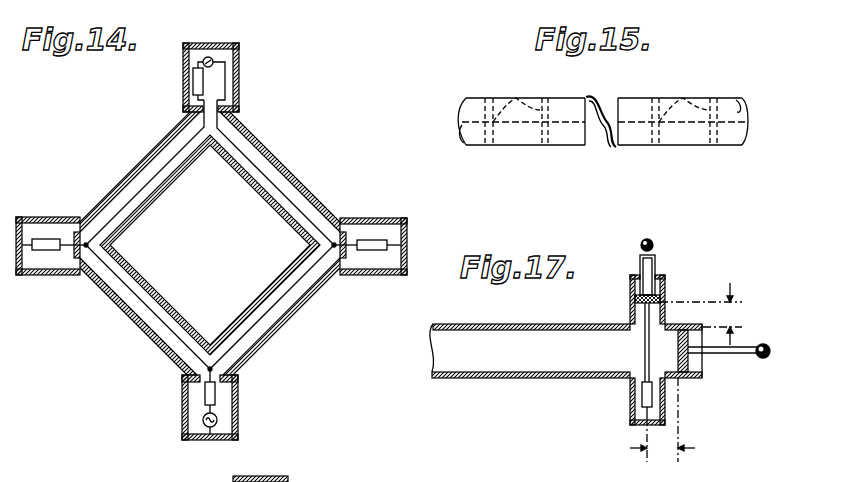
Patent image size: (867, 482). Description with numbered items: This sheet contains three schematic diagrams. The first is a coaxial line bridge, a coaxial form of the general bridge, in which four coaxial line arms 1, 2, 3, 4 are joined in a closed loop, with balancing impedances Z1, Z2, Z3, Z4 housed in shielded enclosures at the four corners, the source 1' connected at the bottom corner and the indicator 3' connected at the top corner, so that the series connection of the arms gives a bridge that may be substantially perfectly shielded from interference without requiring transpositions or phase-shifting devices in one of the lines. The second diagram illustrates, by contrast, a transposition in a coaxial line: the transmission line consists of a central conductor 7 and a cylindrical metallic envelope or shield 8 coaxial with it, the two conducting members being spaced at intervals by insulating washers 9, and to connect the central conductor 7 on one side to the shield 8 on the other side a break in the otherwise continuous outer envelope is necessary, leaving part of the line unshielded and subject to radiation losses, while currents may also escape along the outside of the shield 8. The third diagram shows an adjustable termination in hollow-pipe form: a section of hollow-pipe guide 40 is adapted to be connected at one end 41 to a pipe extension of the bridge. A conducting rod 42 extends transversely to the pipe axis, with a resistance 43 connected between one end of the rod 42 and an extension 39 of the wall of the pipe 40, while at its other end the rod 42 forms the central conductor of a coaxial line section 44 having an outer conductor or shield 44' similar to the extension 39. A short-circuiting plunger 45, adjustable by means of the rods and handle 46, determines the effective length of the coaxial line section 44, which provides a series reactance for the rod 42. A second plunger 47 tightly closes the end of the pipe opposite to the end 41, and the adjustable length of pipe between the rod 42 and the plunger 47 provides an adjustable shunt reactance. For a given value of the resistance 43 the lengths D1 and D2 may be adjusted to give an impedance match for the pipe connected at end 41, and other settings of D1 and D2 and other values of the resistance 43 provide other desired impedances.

In FIG. 14, the bridge arm 1 is at (145, 310).
In FIG. 14, the bridge arm 2 is at (142, 172).
In FIG. 14, the bridge arm 3 is at (278, 172).
In FIG. 14, the bridge arm 4 is at (275, 310).
In FIG. 14, the generator 1' is at (234, 418).
In FIG. 14, the detector 3' is at (229, 59).
In FIG. 14, the impedance Z1 is at (205, 393).
In FIG. 14, the impedance Z2 is at (43, 239).
In FIG. 14, the impedance Z3 is at (193, 86).
In FIG. 14, the impedance Z4 is at (372, 240).
In FIG. 15, the central conductor 7 is at (507, 123).
In FIG. 15, the cylindrical metallic envelope or shield 8 is at (532, 147).
In FIG. 15, the insulating washers 9 is at (522, 92).
In FIG. 17, the extension of the wall of the pipe 39 is at (631, 422).
In FIG. 17, the hollow-pipe guide 40 is at (521, 323).
In FIG. 17, the end of the hollow-pipe guide 41 is at (433, 362).
In FIG. 17, the conducting rod 42 is at (640, 362).
In FIG. 17, the resistance 43 is at (655, 400).
In FIG. 17, the coaxial line section 44 is at (668, 295).
In FIG. 17, the outer conductor or shield 44' is at (616, 277).
In FIG. 17, the short-circuiting plunger 45 is at (630, 312).
In FIG. 17, the rods and handle 46 is at (654, 243).
In FIG. 17, the second plunger 47 is at (701, 363).
In FIG. 17, the length D1 is at (701, 314).
In FIG. 17, the length D2 is at (662, 421).